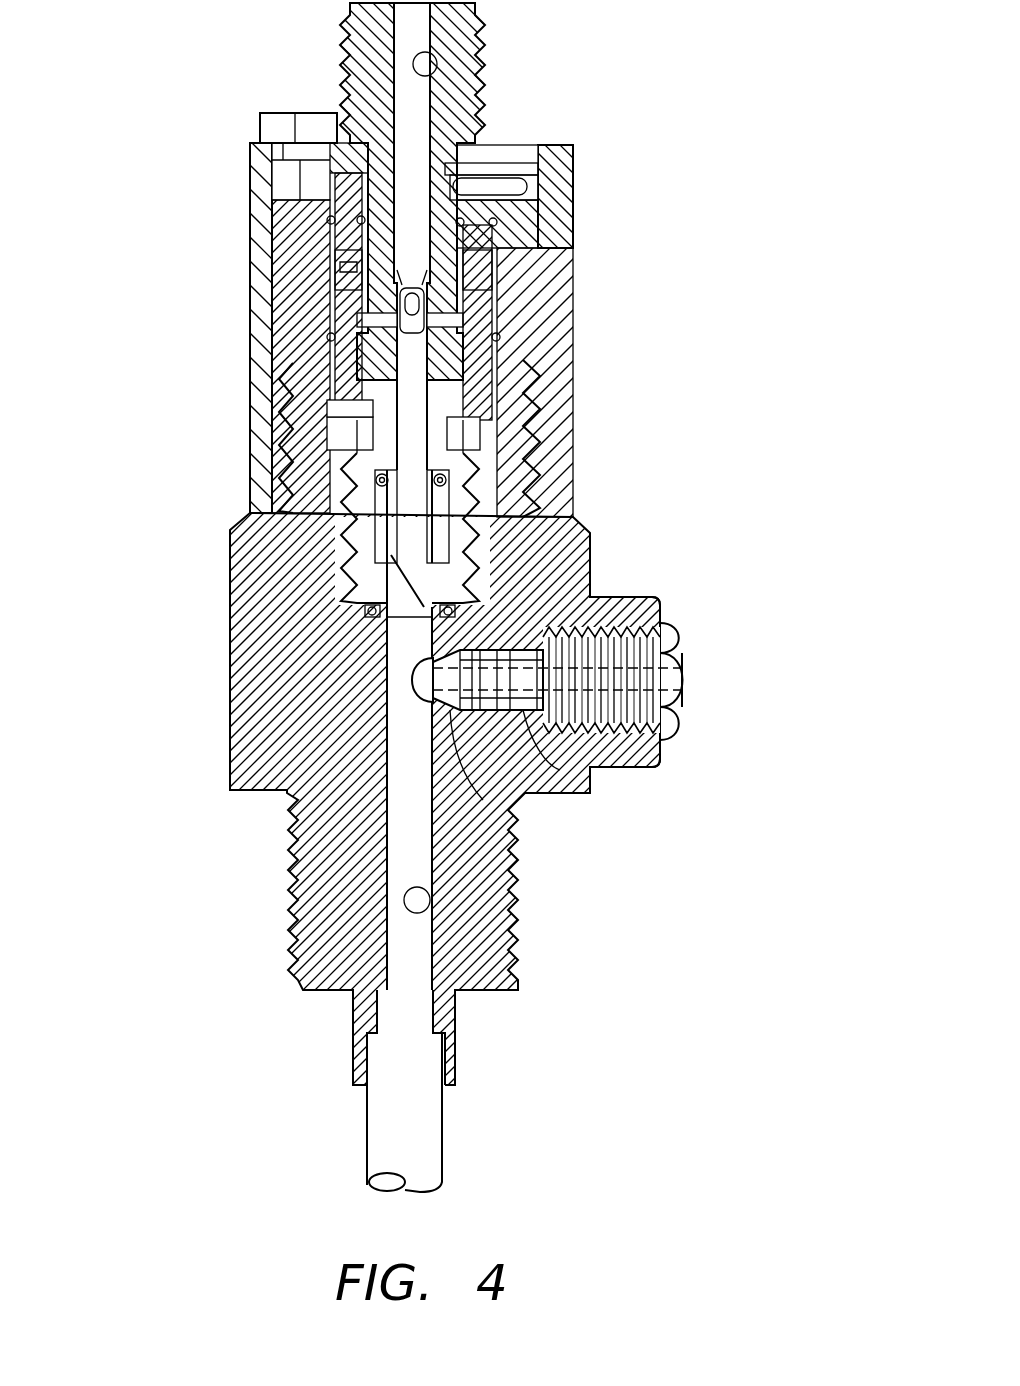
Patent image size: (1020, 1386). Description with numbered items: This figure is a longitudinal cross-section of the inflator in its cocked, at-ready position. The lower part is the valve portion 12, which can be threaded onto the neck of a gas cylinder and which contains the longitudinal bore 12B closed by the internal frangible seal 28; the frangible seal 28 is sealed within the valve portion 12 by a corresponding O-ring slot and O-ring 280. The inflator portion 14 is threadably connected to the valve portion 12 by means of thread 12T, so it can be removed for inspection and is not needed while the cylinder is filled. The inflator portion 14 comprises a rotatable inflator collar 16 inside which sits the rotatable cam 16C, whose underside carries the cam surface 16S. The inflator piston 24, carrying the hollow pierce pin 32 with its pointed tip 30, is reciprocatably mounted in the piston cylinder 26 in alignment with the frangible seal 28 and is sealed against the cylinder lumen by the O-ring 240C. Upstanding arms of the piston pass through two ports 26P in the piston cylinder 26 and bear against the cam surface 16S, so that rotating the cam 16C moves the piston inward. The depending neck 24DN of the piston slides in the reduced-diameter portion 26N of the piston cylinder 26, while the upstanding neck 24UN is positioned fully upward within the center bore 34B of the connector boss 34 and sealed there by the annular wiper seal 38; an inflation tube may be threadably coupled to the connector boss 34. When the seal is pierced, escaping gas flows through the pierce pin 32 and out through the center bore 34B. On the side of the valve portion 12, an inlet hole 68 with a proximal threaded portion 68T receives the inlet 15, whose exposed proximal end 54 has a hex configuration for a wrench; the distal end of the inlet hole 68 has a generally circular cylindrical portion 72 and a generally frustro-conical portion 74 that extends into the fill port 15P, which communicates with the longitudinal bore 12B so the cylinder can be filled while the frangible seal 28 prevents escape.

The valve portion 12 is at (583, 525).
The longitudinal bore 12B is at (430, 900).
The thread 12T is at (543, 395).
The inflator portion 14 is at (333, 418).
The inlet 15 is at (682, 657).
The fill port 15P is at (423, 682).
The inflator collar 16 is at (250, 210).
The rotatable cam 16C is at (518, 162).
The cam surface 16S is at (572, 145).
The inflator piston 24 is at (468, 362).
The upstanding neck 24UN is at (430, 303).
The depending neck 24DN is at (340, 432).
The O-ring 240C is at (494, 224).
The piston cylinder 26 is at (330, 363).
The ports 26P is at (330, 258).
The reduced-diameter portion 26N is at (455, 520).
The frangible seal 28 is at (400, 608).
The O-ring 280 is at (368, 610).
The pointed tip 30 is at (430, 620).
The hollow pierce pin 32 is at (400, 533).
The connector boss 34 is at (477, 37).
The center bore 34B is at (437, 70).
The annular wiper seal 38 is at (333, 268).
The exposed proximal end 54 is at (682, 718).
The inlet hole 68 is at (670, 618).
The proximal threaded portion 68T is at (655, 770).
The generally circular cylindrical portion 72 is at (560, 770).
The generally frustro-conical portion 74 is at (483, 800).